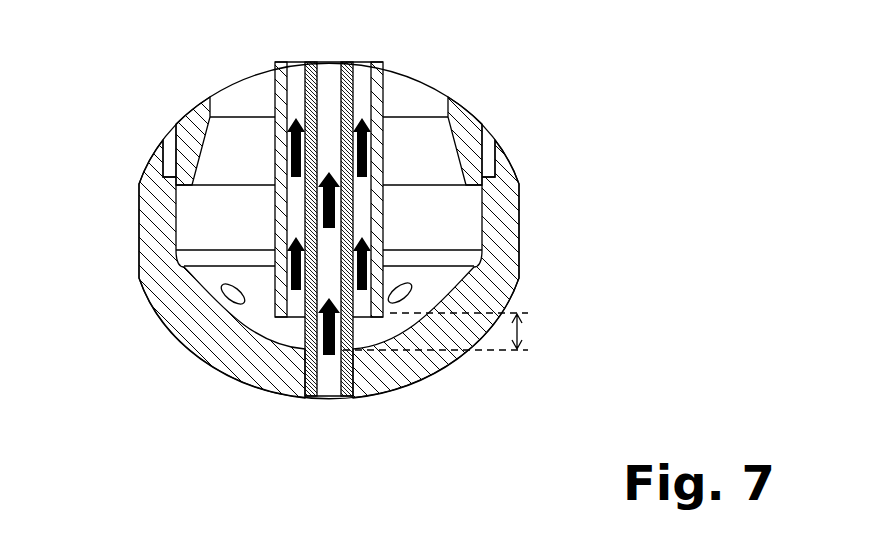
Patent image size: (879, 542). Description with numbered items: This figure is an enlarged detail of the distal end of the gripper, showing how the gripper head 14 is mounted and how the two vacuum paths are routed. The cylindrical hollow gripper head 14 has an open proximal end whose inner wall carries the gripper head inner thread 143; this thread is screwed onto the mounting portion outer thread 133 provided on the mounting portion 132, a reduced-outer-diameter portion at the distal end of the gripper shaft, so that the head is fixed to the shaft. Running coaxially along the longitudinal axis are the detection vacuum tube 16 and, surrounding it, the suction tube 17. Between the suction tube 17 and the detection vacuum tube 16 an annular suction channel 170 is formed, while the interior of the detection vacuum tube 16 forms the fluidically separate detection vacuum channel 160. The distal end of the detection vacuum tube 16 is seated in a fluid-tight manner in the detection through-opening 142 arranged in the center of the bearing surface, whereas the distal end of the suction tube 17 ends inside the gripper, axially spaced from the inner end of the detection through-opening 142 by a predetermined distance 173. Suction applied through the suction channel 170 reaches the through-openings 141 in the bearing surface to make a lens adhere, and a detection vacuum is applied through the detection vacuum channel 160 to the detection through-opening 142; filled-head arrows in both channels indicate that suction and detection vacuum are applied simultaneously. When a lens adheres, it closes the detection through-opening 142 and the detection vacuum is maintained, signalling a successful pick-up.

The gripper head 14 is at (498, 210).
The mounting portion 132 is at (192, 127).
The gripper head inner thread 143 is at (180, 160).
The mounting portion outer thread 133 is at (160, 163).
The suction tube 17 is at (380, 97).
The detection vacuum tube 16 is at (311, 378).
The suction channel 170 is at (298, 90).
The detection vacuum channel 160 is at (330, 130).
The through-openings 141 is at (232, 297).
The detection through-opening 142 is at (350, 372).
The predetermined distance 173 is at (518, 332).